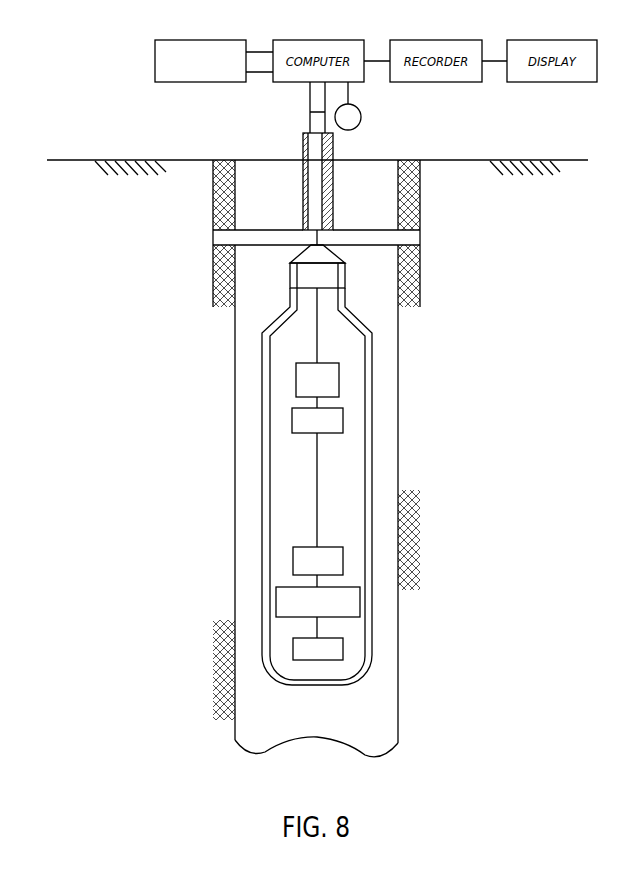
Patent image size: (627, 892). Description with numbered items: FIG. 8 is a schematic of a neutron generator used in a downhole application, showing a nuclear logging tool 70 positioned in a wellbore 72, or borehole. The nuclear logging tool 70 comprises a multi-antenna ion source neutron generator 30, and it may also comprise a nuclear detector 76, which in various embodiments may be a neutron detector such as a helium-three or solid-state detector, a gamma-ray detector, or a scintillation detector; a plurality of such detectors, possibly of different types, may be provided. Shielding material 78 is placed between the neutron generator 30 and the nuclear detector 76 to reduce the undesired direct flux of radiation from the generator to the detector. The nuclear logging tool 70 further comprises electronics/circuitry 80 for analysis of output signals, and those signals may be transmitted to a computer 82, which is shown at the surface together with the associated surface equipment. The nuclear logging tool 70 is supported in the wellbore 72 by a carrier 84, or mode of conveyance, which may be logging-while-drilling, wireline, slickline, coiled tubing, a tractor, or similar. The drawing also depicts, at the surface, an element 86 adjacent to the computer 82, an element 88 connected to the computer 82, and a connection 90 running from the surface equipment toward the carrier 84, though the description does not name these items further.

The multi-antenna ion source neutron generator 30 is at (343, 648).
The nuclear logging tool 70 is at (276, 293).
The wellbore 72 is at (402, 297).
The nuclear detector 76 is at (343, 561).
The shielding material 78 is at (360, 600).
The electronics/circuitry 80 is at (343, 418).
The computer 82 is at (339, 383).
The carrier 84 is at (303, 148).
The depth measuring sheave 86 is at (360, 108).
The power supply 88 is at (155, 48).
The wireline cable 90 is at (310, 116).